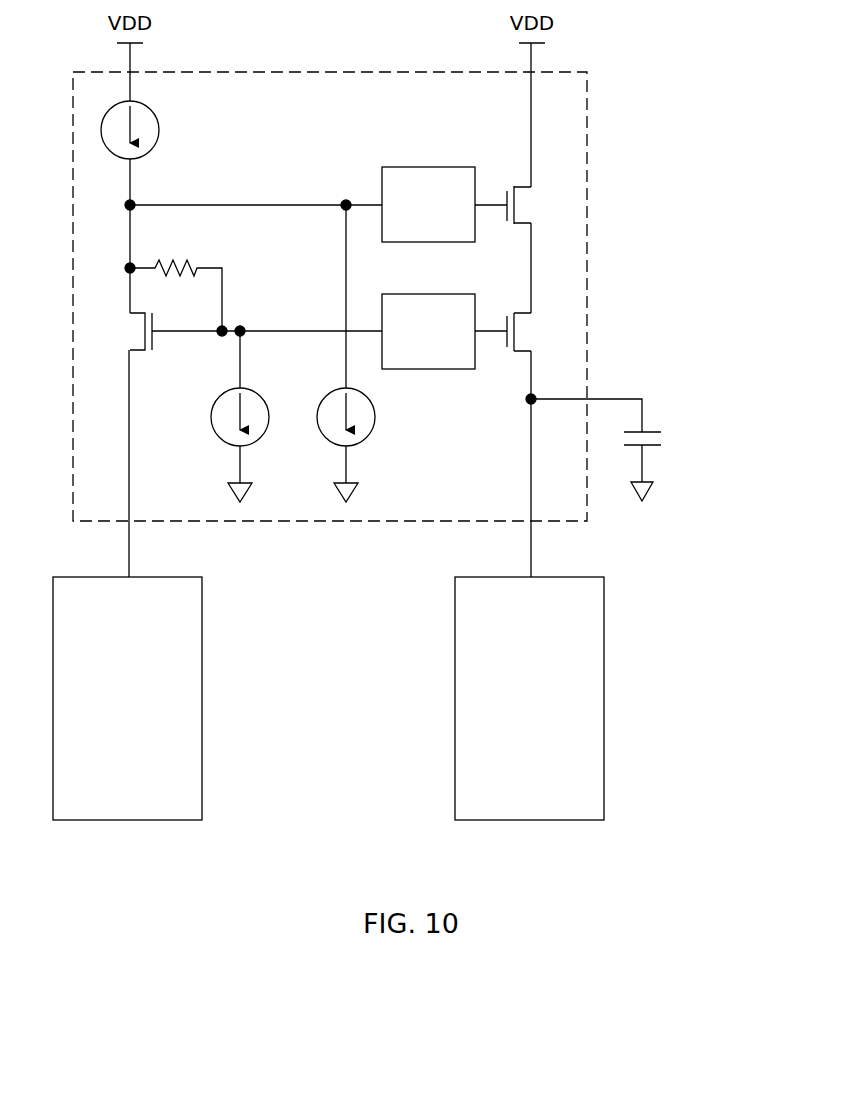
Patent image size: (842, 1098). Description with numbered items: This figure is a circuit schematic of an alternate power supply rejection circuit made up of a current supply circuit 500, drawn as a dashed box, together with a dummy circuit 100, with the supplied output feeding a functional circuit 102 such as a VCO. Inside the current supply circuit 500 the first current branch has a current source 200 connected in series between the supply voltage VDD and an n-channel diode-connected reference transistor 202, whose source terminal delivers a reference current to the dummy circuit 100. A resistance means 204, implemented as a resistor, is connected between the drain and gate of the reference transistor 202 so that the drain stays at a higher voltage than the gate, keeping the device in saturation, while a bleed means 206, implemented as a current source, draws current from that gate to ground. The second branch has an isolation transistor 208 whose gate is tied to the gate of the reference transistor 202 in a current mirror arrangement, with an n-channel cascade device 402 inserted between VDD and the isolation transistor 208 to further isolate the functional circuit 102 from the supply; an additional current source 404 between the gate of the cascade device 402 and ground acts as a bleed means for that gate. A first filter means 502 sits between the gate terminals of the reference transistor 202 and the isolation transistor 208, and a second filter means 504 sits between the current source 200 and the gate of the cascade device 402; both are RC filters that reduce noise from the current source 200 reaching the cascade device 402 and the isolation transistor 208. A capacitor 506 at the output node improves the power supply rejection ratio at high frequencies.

The dummy circuit 100 is at (203, 699).
The functional circuit 102 is at (605, 699).
The current source 200 is at (159, 122).
The reference transistor 202 is at (158, 331).
The resistance means 204 is at (190, 268).
The bleed means 206 is at (222, 390).
The isolation transistor 208 is at (518, 332).
The cascade device 402 is at (518, 205).
The additional current source 404 is at (338, 388).
The current supply circuit 500 is at (587, 240).
The first filter means 502 is at (432, 370).
The second filter means 504 is at (432, 166).
The capacitor 506 is at (662, 442).